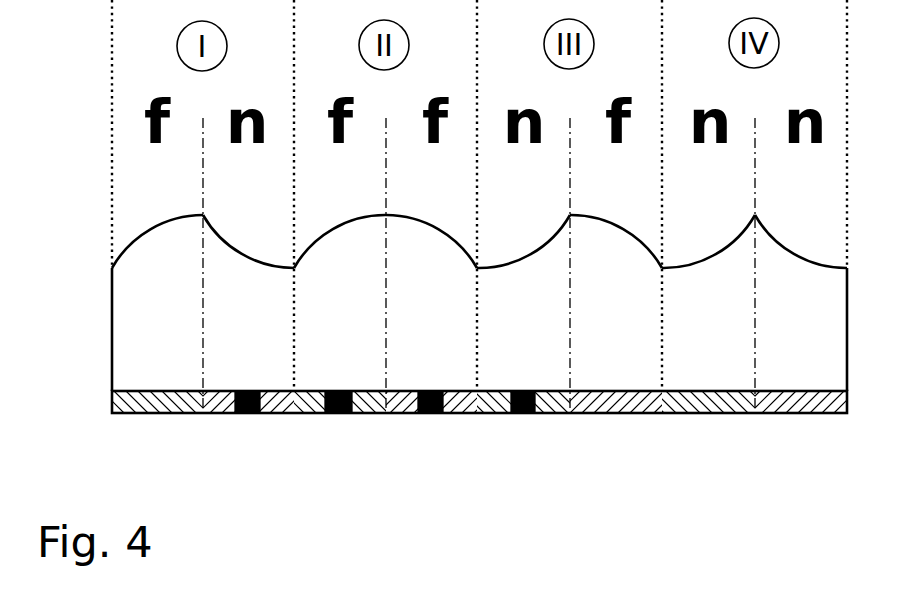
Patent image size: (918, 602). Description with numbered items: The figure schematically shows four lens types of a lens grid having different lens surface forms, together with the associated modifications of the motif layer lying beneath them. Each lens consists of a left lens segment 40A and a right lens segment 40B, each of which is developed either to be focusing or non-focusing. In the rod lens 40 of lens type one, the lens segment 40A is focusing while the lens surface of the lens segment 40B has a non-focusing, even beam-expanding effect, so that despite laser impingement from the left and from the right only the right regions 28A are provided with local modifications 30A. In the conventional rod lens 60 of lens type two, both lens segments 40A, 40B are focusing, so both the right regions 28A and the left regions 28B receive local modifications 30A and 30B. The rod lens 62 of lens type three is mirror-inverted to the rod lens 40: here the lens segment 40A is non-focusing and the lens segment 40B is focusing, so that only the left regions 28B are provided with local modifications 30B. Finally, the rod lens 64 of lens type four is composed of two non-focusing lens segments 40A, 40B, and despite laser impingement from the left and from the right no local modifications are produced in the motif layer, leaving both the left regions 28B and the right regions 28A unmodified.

The lens segment 40A is at (160, 240).
The lens segment 40B is at (249, 270).
The rod lens 40 is at (188, 315).
The rod lens 60 is at (371, 315).
The rod lens 62 is at (555, 315).
The rod lens 64 is at (740, 315).
The local modification 30A is at (249, 390).
The local modification 30B is at (340, 390).
The right region 28A is at (214, 414).
The left region 28B is at (126, 414).